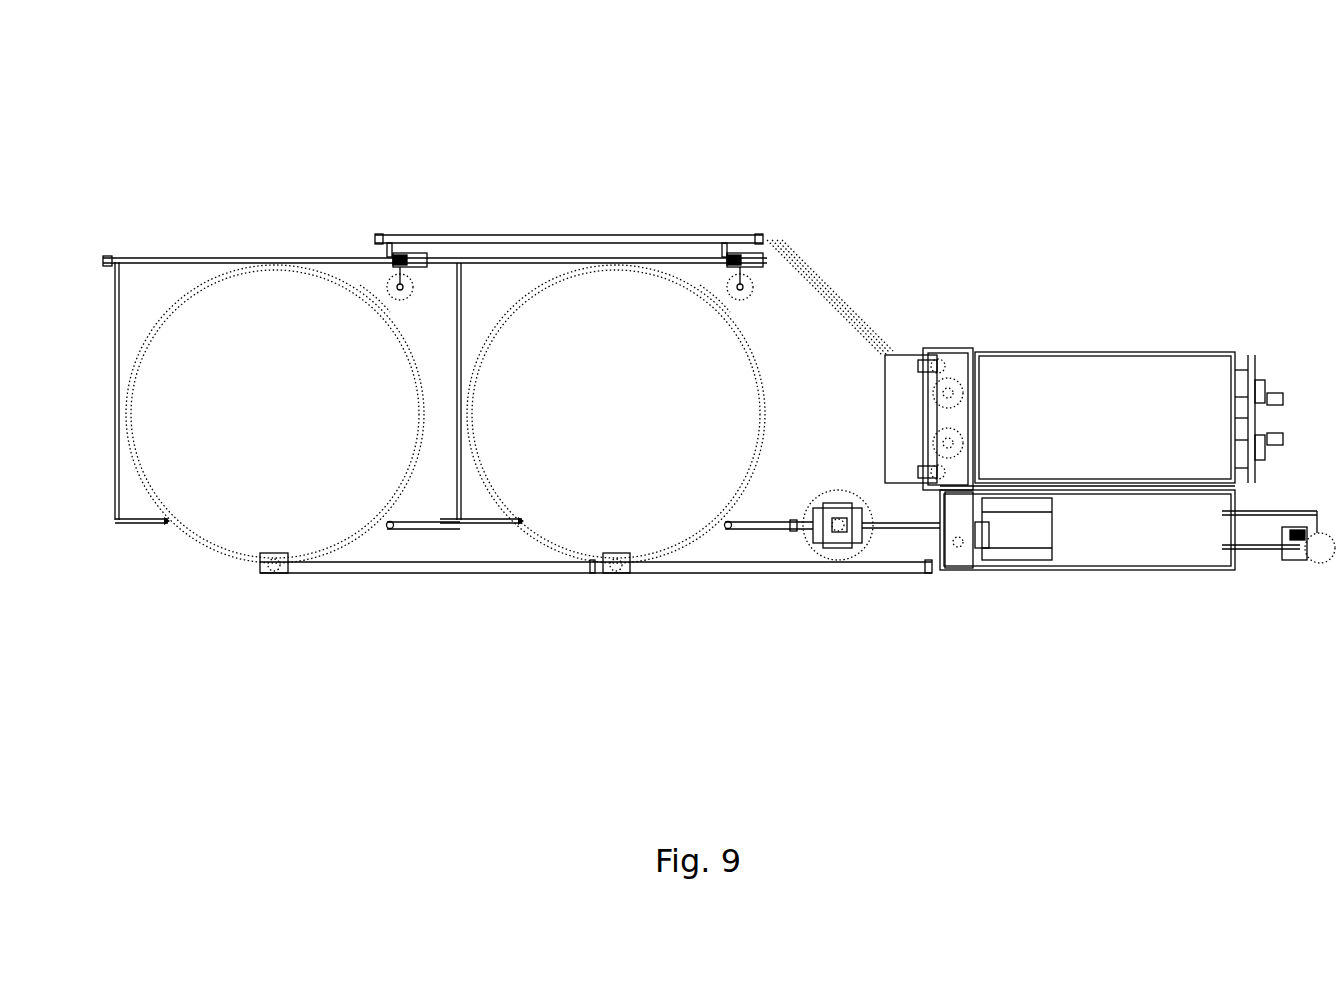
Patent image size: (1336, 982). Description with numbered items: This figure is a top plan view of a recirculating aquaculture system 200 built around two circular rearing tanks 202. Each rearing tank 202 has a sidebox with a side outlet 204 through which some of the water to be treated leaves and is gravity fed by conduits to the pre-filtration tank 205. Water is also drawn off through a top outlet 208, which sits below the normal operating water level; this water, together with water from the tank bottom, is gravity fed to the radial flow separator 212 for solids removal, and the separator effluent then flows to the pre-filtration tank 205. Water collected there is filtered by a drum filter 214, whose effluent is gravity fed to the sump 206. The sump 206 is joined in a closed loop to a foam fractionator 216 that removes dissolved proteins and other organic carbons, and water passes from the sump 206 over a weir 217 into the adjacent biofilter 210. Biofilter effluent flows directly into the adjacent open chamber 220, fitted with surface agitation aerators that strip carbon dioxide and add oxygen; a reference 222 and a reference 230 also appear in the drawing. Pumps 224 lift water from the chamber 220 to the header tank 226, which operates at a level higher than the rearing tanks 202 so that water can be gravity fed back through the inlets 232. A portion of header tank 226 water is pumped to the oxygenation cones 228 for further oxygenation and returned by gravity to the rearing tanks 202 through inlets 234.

The recirculating aquaculture system 200 is at (765, 145).
The rearing tank 202 is at (208, 545).
The side outlet 204 is at (272, 576).
The pre-filtration tank 205 is at (955, 560).
The sump 206 is at (1075, 570).
The top outlet 208 is at (390, 528).
The biofilter 210 is at (1183, 350).
The radial flow separator 212 is at (812, 548).
The drum filter 214 is at (1005, 565).
The foam fractionator 216 is at (1320, 560).
The weir 217 is at (1080, 487).
The chamber 220 is at (960, 348).
The port 222 is at (960, 390).
The pump 224 is at (937, 362).
The header tank 226 is at (882, 406).
The oxygenation cone 228 is at (410, 258).
The sensor 230 is at (415, 283).
The inlet 232 is at (165, 523).
The inlet 234 is at (376, 294).